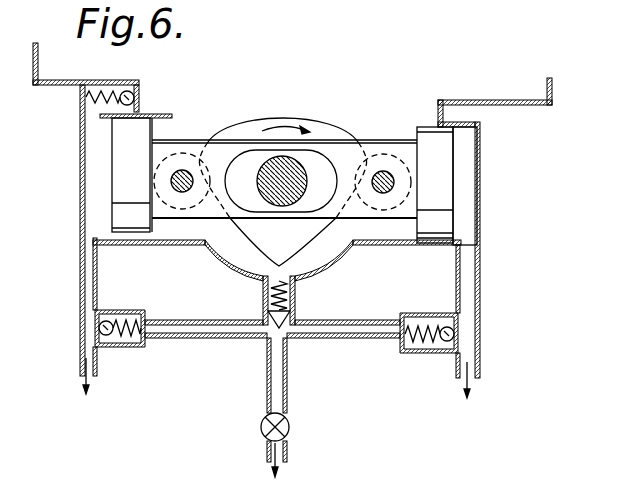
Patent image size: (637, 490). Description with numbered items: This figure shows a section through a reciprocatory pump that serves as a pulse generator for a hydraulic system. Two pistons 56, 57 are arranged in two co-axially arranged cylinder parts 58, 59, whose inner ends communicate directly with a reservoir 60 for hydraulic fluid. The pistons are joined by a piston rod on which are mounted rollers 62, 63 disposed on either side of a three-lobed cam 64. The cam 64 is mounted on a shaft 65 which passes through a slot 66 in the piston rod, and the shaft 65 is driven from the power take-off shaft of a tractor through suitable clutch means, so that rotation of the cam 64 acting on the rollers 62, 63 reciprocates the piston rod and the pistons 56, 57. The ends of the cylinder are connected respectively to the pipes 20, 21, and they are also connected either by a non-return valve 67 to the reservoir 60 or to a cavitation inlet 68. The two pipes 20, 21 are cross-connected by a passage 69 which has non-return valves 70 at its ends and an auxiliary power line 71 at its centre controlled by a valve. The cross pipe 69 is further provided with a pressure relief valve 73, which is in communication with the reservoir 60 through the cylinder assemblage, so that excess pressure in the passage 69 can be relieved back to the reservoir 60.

The pipe 20 is at (466, 347).
The pipe 21 is at (78, 296).
The piston 56 is at (115, 192).
The piston 57 is at (442, 185).
The cylinder part 58 is at (174, 244).
The cylinder part 59 is at (393, 247).
The reservoir 60 is at (547, 98).
The roller 62 is at (152, 160).
The roller 63 is at (412, 156).
The three-lobed cam 64 is at (360, 142).
The shaft 65 is at (288, 176).
The slot 66 is at (238, 170).
The non-return valve 67 is at (136, 97).
The cavitation inlet 68 is at (440, 125).
The passage 69 is at (227, 323).
The non-return valve 70 is at (106, 333).
The auxiliary power line 71 is at (273, 376).
The pressure relief valve 73 is at (283, 326).